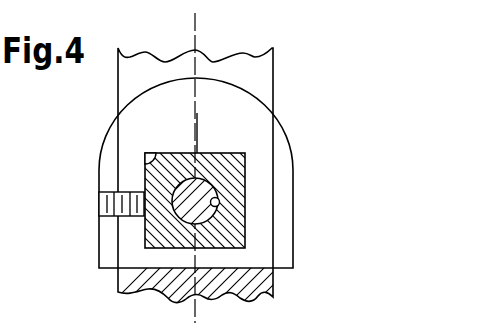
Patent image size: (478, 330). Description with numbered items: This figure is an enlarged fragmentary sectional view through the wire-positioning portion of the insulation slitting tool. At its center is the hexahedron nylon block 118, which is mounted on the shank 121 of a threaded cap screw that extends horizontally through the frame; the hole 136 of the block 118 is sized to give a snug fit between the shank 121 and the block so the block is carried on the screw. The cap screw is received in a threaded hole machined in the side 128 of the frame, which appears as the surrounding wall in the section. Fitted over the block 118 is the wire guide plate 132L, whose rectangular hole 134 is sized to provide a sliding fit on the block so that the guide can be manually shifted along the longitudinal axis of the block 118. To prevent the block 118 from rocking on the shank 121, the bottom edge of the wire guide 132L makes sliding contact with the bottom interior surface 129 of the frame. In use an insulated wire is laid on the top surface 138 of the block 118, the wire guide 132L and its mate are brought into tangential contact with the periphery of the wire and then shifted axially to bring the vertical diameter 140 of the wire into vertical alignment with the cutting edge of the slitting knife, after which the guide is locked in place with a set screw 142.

The side of frame 128 is at (262, 67).
The wire guide plate 132L is at (137, 110).
The vertical diameter 140 is at (197, 115).
The rectangular hole 134 is at (145, 178).
The set screw 142 is at (99, 200).
The hexahedron nylon block 118 is at (163, 243).
The top surface of block 138 is at (228, 153).
The shank of cap screw 121 is at (208, 180).
The hole of nylon block 136 is at (219, 202).
The bottom interior surface of frame 129 is at (253, 268).